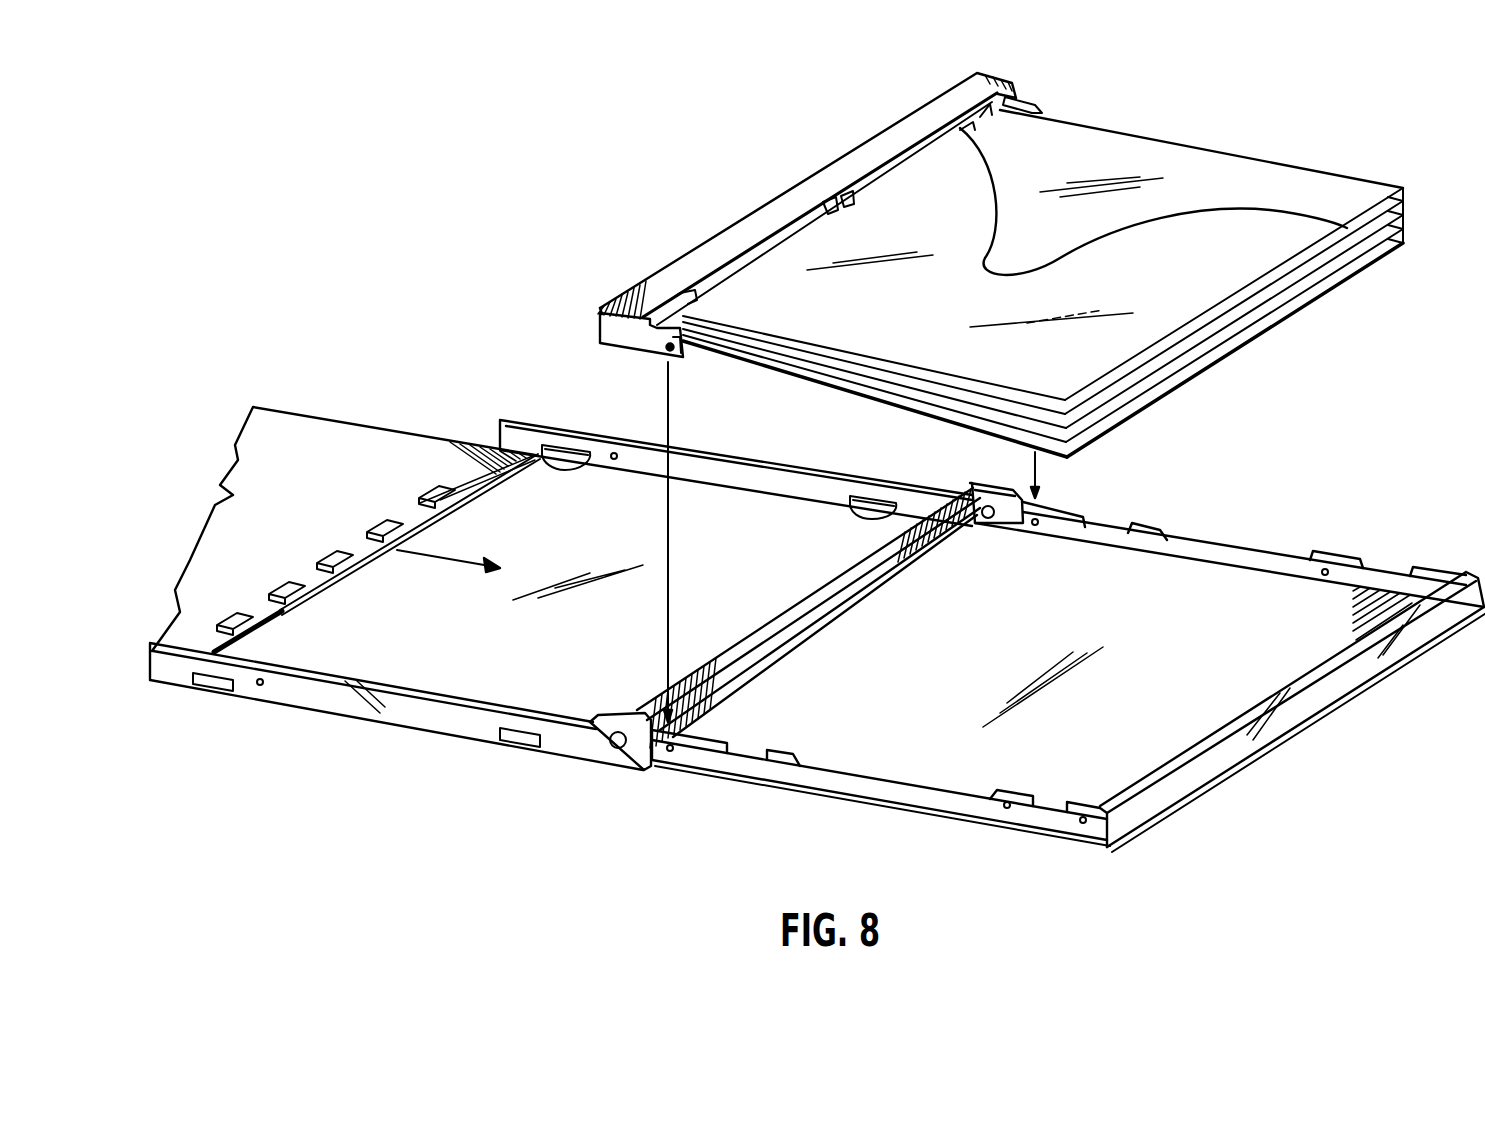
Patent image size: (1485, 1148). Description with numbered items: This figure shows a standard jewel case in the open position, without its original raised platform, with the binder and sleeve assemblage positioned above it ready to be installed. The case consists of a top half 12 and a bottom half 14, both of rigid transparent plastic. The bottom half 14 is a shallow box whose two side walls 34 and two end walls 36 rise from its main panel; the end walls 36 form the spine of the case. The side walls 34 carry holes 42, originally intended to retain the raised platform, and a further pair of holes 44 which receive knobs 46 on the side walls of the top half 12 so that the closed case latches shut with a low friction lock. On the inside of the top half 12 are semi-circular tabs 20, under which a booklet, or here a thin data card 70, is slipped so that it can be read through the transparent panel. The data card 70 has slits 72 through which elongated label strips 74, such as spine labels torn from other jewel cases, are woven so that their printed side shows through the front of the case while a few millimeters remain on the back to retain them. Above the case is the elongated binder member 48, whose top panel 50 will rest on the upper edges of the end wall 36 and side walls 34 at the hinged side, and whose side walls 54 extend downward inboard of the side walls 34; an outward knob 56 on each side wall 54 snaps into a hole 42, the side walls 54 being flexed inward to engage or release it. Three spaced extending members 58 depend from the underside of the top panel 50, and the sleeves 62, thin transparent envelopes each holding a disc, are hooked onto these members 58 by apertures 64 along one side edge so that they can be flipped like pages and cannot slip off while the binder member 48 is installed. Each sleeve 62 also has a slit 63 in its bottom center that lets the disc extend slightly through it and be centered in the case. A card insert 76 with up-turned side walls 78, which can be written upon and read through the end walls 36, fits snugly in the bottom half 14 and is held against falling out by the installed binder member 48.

The top half 12 is at (605, 659).
The bottom half 14 is at (1380, 697).
The semi-circular tabs 20 is at (557, 458).
The side walls 34 is at (692, 752).
The end walls 36 is at (800, 598).
The holes 42 is at (660, 762).
The holes 44 is at (1007, 809).
The knobs 46 is at (260, 690).
The binder member 48 is at (813, 160).
The top panel 50 is at (707, 252).
The side walls 54 is at (600, 325).
The knob 56 is at (666, 345).
The extending members 58 is at (823, 202).
The sleeves 62 is at (1280, 313).
The slit 63 is at (853, 387).
The apertures 64 is at (853, 187).
The data card 70 is at (305, 440).
The slits 72 is at (270, 613).
The label strips 74 is at (337, 548).
The card insert 76 is at (1147, 723).
The side walls 78 is at (760, 638).